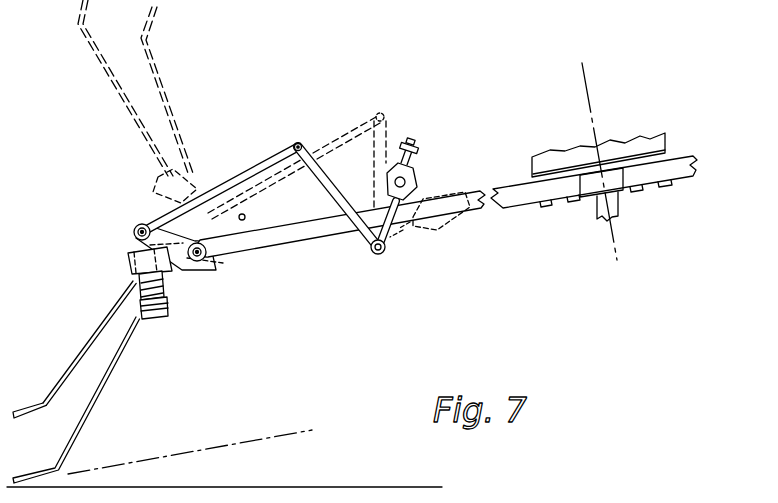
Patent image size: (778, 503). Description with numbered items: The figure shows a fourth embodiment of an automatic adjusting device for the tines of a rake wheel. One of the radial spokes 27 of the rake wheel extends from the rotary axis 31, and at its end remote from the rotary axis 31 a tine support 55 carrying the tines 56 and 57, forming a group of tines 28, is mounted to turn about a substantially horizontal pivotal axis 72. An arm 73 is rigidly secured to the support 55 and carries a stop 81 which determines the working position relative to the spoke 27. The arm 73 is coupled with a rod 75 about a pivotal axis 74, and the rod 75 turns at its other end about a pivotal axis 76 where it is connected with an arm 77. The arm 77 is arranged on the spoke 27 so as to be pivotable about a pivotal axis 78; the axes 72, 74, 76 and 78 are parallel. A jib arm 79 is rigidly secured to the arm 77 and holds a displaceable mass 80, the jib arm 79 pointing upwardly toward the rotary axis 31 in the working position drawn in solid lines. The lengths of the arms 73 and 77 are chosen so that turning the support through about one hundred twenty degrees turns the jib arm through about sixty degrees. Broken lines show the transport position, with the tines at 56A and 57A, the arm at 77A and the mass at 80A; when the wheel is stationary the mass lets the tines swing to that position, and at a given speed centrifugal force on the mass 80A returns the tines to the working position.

The spoke 27 is at (305, 238).
The group of tines 28 is at (106, 315).
The rotary axis 31 is at (588, 101).
The tine support 55 is at (152, 325).
The tine 56 is at (60, 378).
The tine in transport position 56A is at (153, 62).
The tine 57 is at (75, 438).
The tine in transport position 57A is at (95, 47).
The pivotal axis 72 is at (197, 270).
The arm 73 is at (173, 231).
The pivotal axis 74 is at (136, 229).
The rod 75 is at (258, 165).
The pivotal axis 76 is at (299, 141).
The arm 77 is at (342, 188).
The arm in transport position 77A is at (387, 118).
The pivotal axis 78 is at (378, 255).
The jib arm 79 is at (417, 225).
The displaceable mass 80 is at (413, 180).
The mass in transport position 80A is at (455, 222).
The stop 81 is at (218, 264).